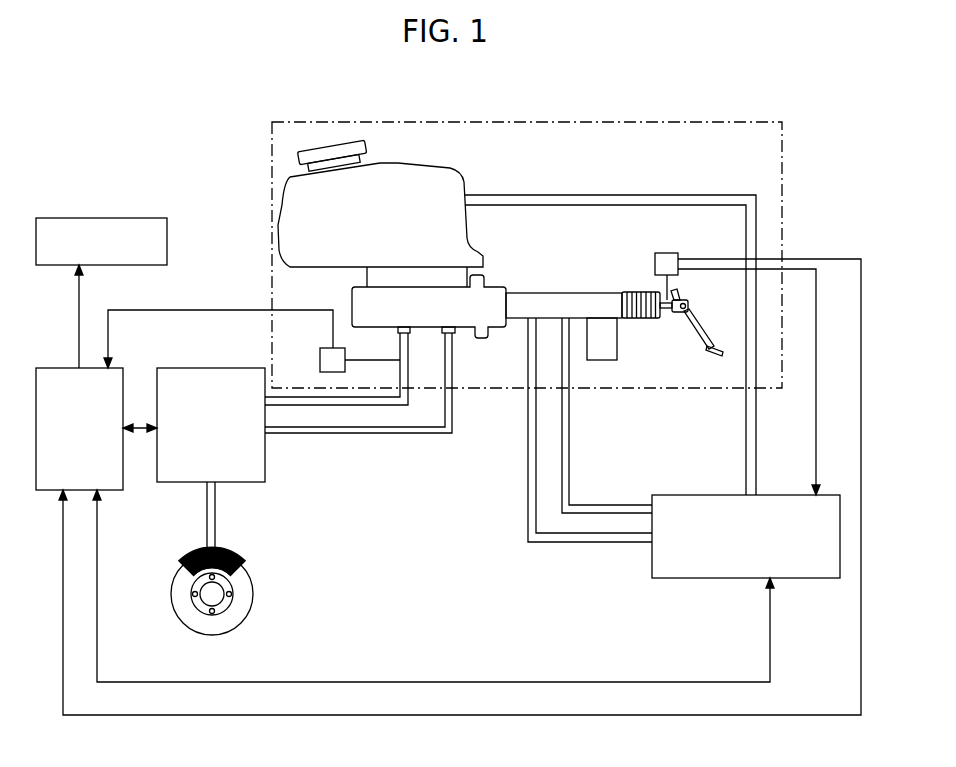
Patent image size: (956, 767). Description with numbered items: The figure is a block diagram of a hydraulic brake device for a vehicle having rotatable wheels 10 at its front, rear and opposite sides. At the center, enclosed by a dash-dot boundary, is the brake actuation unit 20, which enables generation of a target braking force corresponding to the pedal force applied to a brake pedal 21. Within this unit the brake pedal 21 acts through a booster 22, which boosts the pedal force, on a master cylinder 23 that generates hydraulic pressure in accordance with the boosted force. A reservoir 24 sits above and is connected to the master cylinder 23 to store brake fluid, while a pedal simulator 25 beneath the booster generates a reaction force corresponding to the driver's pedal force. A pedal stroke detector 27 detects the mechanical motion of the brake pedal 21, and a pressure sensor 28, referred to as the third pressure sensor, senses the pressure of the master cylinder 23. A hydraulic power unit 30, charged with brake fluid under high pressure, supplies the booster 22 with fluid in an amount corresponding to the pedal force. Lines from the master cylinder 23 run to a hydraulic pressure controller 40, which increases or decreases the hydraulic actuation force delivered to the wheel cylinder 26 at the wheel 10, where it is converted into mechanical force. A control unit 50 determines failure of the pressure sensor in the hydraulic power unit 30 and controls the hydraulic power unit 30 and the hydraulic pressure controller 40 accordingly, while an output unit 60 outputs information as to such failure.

The wheel 10 is at (172, 593).
The brake actuation unit 20 is at (575, 122).
The brake pedal 21 is at (700, 327).
The booster 22 is at (555, 297).
The master cylinder 23 is at (352, 296).
The reservoir 24 is at (432, 165).
The pedal simulator 25 is at (617, 344).
The wheel cylinder 26 is at (238, 553).
The pedal stroke detector 27 is at (663, 253).
The pressure sensor 28 is at (320, 352).
The hydraulic power unit 30 is at (730, 495).
The hydraulic pressure controller 40 is at (160, 368).
The control unit 50 is at (57, 368).
The output unit 60 is at (57, 218).